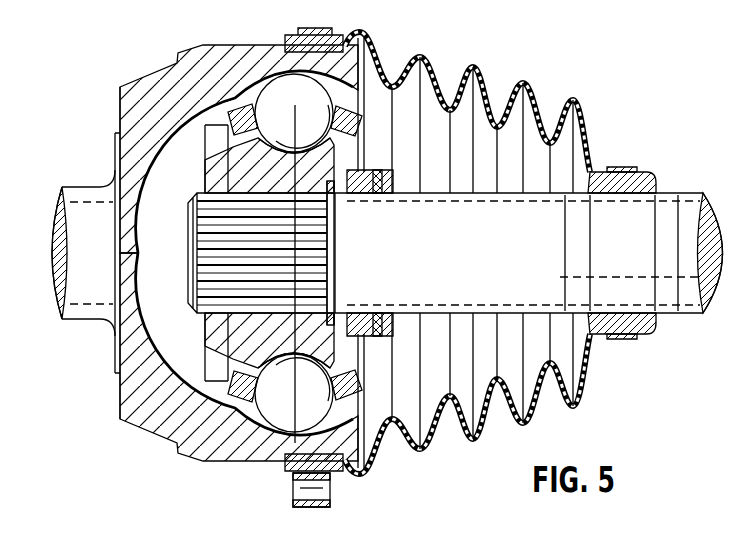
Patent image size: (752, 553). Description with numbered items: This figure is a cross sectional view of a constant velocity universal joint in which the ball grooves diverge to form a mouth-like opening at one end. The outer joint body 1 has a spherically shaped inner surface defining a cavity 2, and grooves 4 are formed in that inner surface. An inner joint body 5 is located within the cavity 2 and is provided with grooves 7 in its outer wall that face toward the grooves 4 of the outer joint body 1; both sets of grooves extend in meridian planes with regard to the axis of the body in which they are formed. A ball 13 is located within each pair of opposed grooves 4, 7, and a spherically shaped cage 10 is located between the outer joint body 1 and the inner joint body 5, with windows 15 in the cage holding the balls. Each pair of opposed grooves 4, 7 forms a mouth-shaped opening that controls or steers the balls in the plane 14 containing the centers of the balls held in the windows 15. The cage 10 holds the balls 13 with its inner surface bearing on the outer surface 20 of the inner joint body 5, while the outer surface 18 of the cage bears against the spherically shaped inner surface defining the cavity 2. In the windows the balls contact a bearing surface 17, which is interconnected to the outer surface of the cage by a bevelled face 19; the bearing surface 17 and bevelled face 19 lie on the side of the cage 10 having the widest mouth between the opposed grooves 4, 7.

The outer joint body 1 is at (157, 422).
The cavity 2 is at (117, 303).
The grooves 4 is at (255, 413).
The inner joint body 5 is at (250, 180).
The grooves 7 is at (240, 150).
The cage 10 is at (210, 457).
The ball 13 is at (283, 417).
The plane 14 is at (328, 488).
The windows 15 is at (313, 143).
The bearing surface 17 is at (367, 467).
The outer surface 18 is at (295, 140).
The bevelled face 19 is at (380, 440).
The outer surface 20 is at (365, 95).